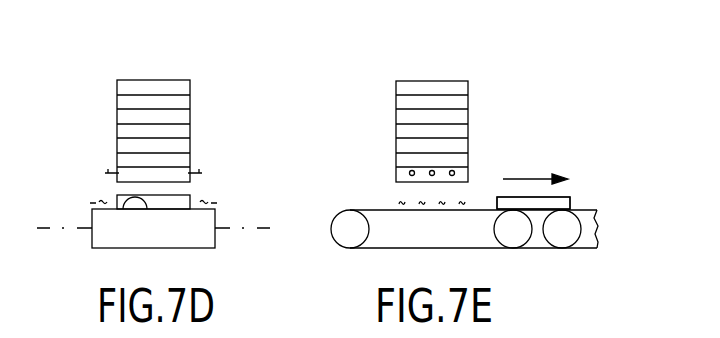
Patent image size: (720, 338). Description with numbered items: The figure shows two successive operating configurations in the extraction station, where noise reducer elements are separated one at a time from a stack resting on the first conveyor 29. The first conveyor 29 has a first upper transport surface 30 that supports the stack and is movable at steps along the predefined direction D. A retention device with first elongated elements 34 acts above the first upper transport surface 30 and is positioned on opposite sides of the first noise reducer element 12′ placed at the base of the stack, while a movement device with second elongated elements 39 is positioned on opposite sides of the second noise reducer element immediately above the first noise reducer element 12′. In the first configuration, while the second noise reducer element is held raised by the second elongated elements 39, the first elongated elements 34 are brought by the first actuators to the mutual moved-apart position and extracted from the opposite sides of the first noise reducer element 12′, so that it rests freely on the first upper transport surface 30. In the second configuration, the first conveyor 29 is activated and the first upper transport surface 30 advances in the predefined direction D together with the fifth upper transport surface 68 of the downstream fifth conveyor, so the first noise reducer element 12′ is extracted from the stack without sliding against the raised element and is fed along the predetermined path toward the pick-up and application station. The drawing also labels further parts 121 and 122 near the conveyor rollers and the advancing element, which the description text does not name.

In FIG. 7D, the first noise reducer element 12′ is at (158, 205).
In FIG. 7E, the first noise reducer element 12′ is at (568, 197).
In FIG. 7D, the first upper transport surface 30 is at (122, 210).
In FIG. 7E, the first upper transport surface 30 is at (382, 208).
In FIG. 7D, the second elongated elements 39 is at (108, 169).
In FIG. 7E, the second elongated elements 39 is at (453, 171).
In FIG. 7D, the first elongated elements 34 is at (90, 200).
In FIG. 7E, the first elongated elements 34 is at (443, 202).
In FIG. 7E, the first conveyor 29 is at (320, 250).
In FIG. 7E, the fifth upper transport surface 68 is at (587, 209).
In FIG. 7E, the rollers 121 is at (542, 210).
In FIG. 7E, the chip carrier substrate 122 is at (512, 197).
In FIG. 7E, the predefined direction D is at (533, 190).